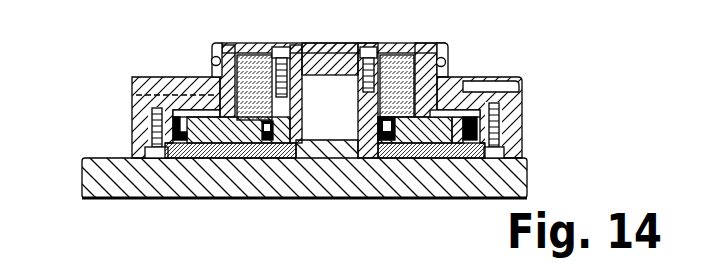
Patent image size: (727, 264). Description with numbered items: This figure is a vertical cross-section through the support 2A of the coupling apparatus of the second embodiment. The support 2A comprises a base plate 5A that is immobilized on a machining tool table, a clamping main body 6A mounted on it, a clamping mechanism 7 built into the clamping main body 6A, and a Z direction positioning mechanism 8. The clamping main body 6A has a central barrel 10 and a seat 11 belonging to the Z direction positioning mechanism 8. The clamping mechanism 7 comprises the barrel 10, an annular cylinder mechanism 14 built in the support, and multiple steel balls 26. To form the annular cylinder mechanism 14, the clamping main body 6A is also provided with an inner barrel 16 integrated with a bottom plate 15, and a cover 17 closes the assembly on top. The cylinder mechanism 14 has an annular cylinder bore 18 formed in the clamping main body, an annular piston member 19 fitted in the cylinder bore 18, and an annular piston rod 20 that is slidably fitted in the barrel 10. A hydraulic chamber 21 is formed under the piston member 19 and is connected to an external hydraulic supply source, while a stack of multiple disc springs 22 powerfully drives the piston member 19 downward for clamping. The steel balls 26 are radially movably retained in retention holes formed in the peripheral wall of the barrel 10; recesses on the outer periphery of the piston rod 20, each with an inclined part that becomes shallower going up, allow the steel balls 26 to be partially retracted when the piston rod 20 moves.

The support 2A is at (332, 120).
The base plate 5A is at (97, 178).
The clamping main body 6A is at (134, 129).
The clamping mechanism 7 is at (324, 79).
The Z direction positioning mechanism 8 is at (447, 77).
The barrel 10 is at (213, 44).
The seat 11 is at (493, 62).
The cylinder mechanism 14 is at (213, 142).
The bottom plate 15 is at (273, 141).
The inner barrel 16 is at (358, 112).
The cover 17 is at (325, 42).
The cylinder bore 18 is at (502, 95).
The piston member 19 is at (480, 141).
The piston rod 20 is at (436, 43).
The hydraulic chamber 21 is at (438, 141).
The disc springs 22 is at (400, 141).
The steel balls 26 is at (211, 61).